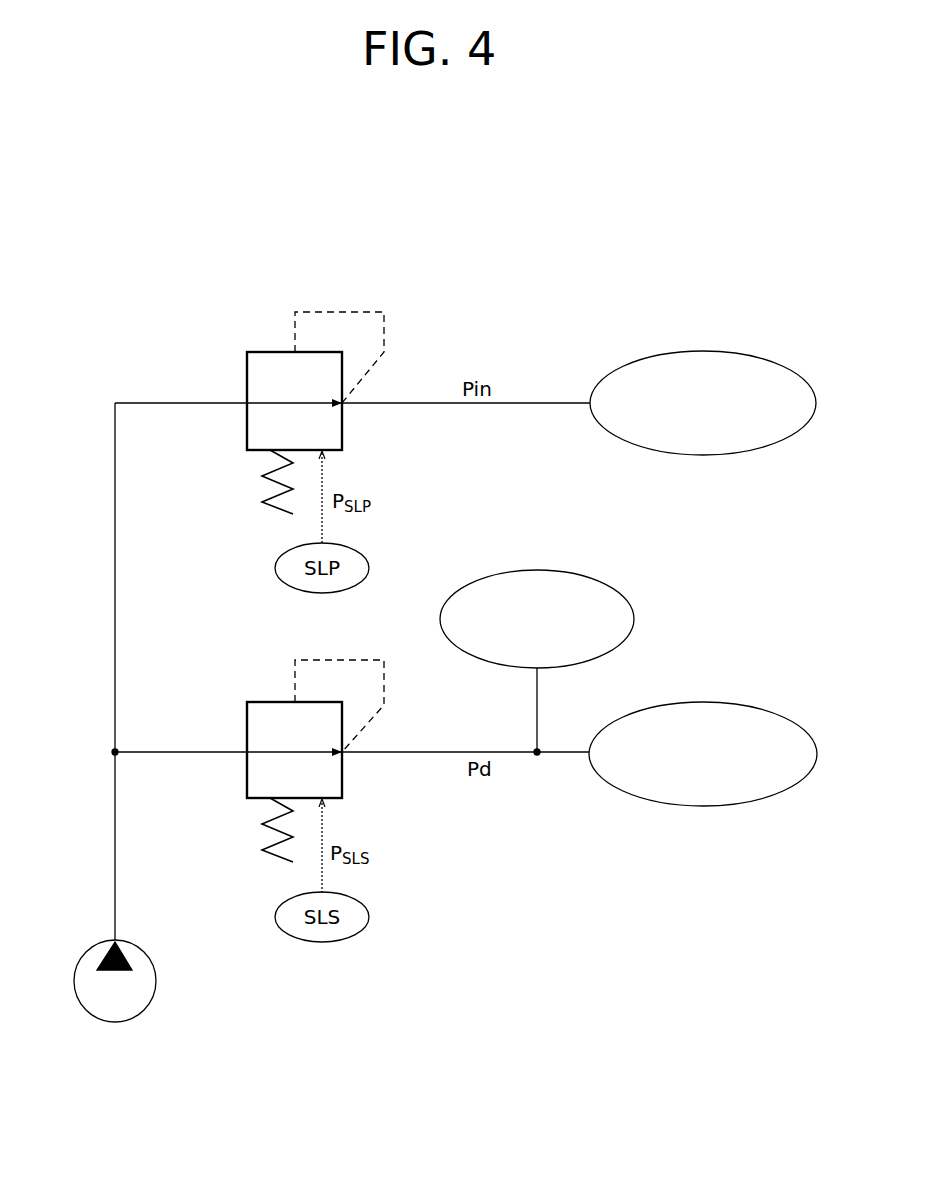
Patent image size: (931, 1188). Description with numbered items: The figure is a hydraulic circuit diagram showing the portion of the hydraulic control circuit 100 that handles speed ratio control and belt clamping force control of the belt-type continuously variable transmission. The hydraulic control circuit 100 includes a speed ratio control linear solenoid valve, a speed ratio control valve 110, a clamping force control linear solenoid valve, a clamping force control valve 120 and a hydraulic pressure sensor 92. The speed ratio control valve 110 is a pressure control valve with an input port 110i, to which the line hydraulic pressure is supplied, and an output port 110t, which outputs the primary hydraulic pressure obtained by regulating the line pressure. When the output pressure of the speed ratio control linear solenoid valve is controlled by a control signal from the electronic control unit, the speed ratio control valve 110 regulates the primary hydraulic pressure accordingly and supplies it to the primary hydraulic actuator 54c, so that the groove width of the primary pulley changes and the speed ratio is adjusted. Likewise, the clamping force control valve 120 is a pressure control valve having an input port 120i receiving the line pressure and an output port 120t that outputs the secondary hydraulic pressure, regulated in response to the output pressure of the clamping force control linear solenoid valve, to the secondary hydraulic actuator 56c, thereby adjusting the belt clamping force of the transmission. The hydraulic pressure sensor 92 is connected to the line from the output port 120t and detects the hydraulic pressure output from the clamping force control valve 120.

The hydraulic control circuit 100 is at (163, 230).
The speed ratio control valve 110 is at (255, 427).
The input port 110i is at (247, 403).
The output port 110t is at (342, 403).
The clamping force control valve 120 is at (278, 712).
The input port 120i is at (247, 752).
The output port 120t is at (342, 752).
The primary hydraulic actuator 54c is at (708, 352).
The secondary hydraulic actuator 56c is at (722, 702).
The hydraulic pressure sensor 92 is at (543, 570).